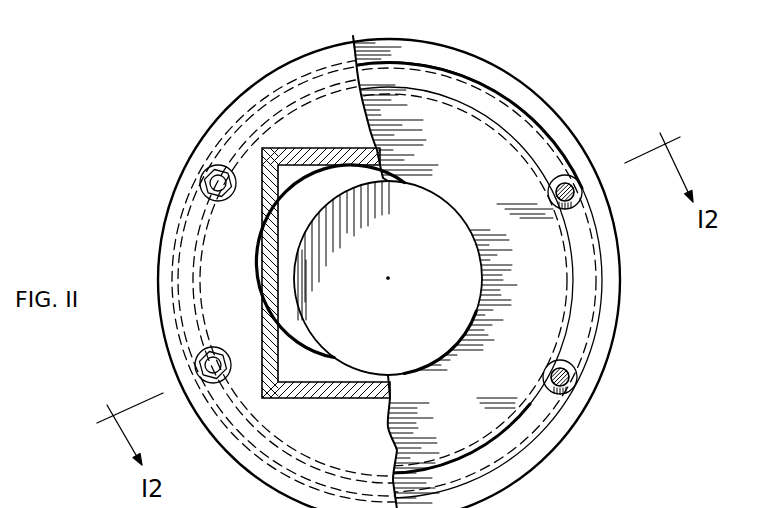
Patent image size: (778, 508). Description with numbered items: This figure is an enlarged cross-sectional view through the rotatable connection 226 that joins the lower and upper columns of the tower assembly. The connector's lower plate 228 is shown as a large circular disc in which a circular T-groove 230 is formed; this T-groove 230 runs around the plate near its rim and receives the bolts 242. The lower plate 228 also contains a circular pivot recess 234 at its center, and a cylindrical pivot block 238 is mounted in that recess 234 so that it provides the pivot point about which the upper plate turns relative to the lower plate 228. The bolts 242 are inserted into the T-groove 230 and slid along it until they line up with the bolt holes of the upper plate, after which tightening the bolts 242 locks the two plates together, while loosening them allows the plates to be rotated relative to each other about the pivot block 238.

The rotatable connection 226 is at (560, 97).
The lower plate 228 is at (608, 270).
The circular T-groove 230 is at (547, 153).
The circular pivot recess 234 is at (432, 185).
The cylindrical pivot block 238 is at (472, 278).
The bolts 242 is at (207, 184).